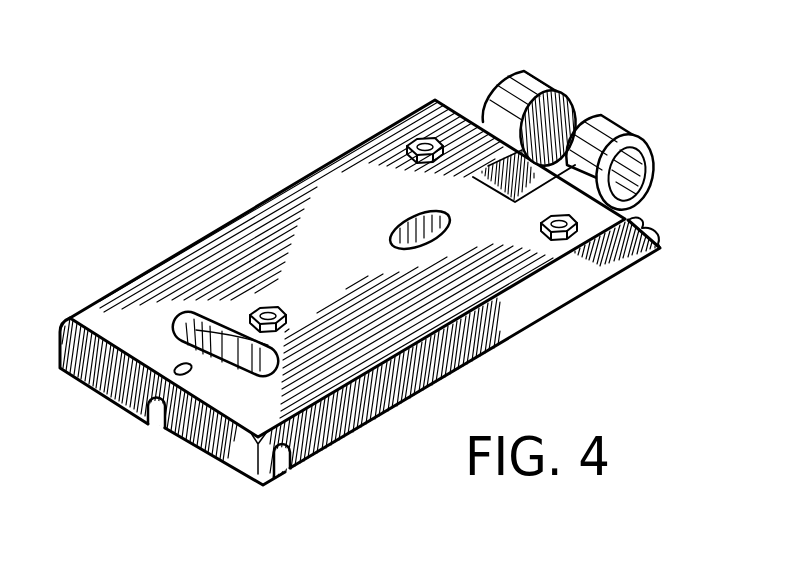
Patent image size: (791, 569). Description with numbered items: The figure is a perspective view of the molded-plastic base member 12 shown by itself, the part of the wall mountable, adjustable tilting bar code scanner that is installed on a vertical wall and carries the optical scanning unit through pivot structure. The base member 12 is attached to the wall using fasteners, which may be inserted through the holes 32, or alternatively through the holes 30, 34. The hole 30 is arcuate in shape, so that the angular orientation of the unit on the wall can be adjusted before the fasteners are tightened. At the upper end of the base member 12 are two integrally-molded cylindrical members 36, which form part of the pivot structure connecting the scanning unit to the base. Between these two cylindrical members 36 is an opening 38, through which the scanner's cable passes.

The base member 12 is at (97, 430).
The hole 30 is at (196, 323).
The holes 32 is at (265, 307).
The hole 34 is at (415, 222).
The cylindrical members 36 is at (540, 86).
The opening 38 is at (582, 120).